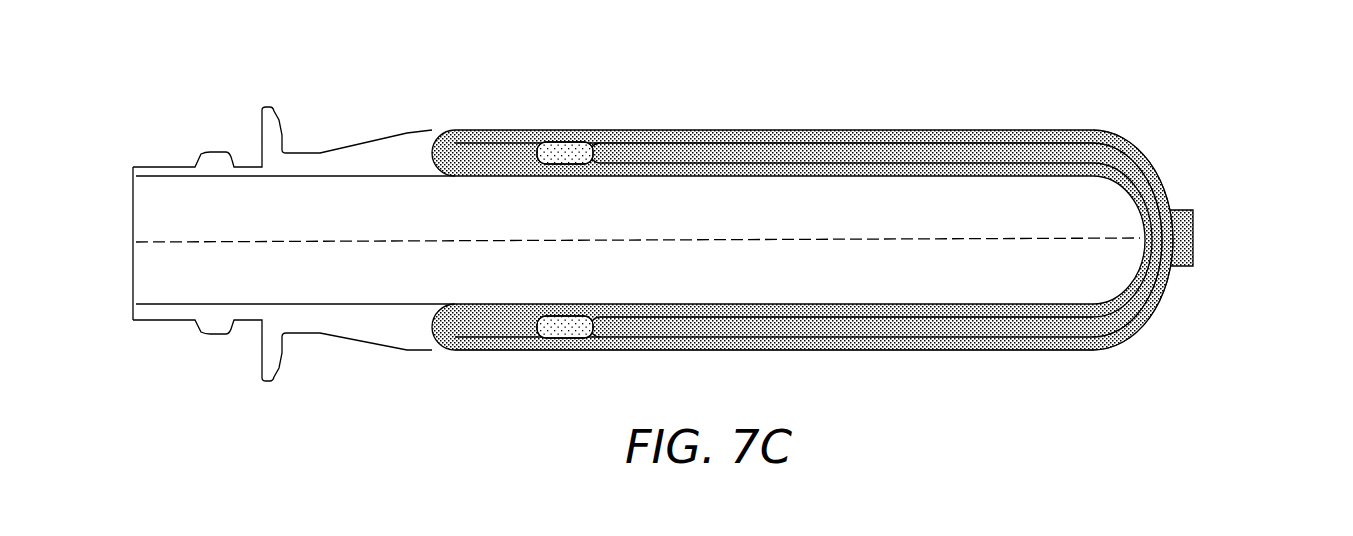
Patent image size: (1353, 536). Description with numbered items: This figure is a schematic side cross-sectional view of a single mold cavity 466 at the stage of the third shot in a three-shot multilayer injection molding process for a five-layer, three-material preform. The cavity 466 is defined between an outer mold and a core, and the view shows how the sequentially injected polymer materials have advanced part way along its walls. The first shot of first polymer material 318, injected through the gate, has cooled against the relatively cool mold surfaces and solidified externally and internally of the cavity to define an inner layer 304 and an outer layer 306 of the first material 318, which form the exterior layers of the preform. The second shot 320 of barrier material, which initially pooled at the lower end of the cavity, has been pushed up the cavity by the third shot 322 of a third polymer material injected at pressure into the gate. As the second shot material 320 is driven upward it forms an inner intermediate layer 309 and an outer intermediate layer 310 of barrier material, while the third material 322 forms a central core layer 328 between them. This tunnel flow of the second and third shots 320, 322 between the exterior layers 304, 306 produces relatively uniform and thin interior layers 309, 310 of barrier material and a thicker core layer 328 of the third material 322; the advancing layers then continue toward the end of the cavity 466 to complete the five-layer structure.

The inner layer 304 is at (798, 177).
The outer layer 306 is at (815, 129).
The inner intermediate layer 309 is at (642, 317).
The outer intermediate layer 310 is at (750, 335).
The first polymer material 318 is at (975, 129).
The second shot of second polymer material 320 is at (823, 320).
The third shot of third polymer material 322 is at (1020, 327).
The central core layer 328 is at (678, 148).
The mold cavity 466 is at (378, 329).